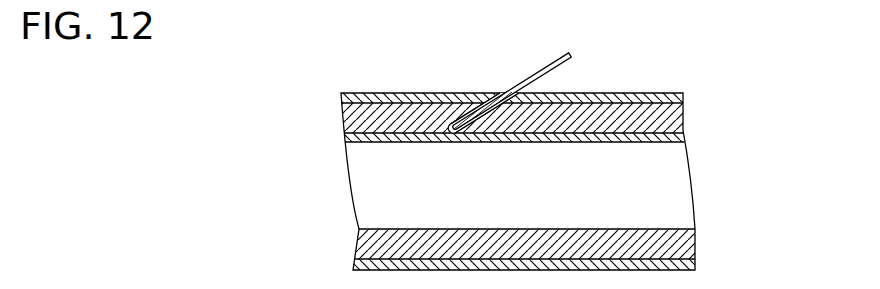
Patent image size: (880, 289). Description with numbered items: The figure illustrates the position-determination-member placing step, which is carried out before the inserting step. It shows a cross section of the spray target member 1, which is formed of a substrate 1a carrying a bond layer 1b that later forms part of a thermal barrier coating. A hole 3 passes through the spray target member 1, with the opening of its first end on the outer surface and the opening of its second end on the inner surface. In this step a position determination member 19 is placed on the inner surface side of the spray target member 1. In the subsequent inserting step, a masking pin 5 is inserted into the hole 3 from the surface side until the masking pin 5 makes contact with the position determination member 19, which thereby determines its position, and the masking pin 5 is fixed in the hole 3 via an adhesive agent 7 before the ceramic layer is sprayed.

The spray target member 1 is at (552, 140).
The substrate 1a is at (674, 116).
The bond layer 1b is at (683, 97).
The hole 3 is at (492, 131).
The masking pin 5 is at (523, 78).
The adhesive agent 7 is at (461, 128).
The position determination member 19 is at (553, 144).